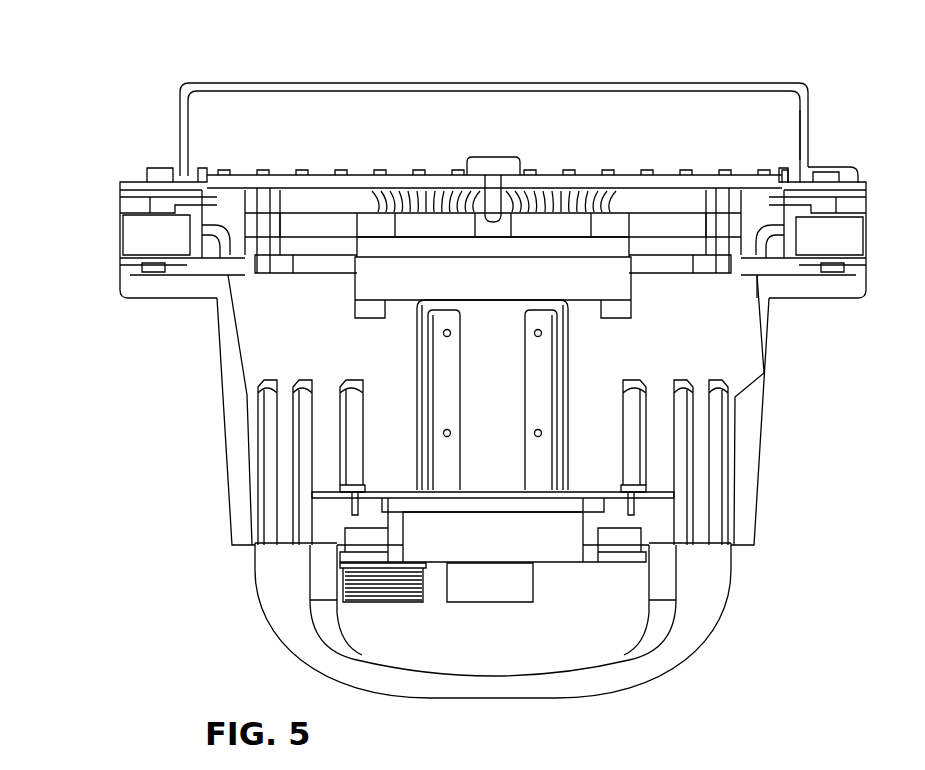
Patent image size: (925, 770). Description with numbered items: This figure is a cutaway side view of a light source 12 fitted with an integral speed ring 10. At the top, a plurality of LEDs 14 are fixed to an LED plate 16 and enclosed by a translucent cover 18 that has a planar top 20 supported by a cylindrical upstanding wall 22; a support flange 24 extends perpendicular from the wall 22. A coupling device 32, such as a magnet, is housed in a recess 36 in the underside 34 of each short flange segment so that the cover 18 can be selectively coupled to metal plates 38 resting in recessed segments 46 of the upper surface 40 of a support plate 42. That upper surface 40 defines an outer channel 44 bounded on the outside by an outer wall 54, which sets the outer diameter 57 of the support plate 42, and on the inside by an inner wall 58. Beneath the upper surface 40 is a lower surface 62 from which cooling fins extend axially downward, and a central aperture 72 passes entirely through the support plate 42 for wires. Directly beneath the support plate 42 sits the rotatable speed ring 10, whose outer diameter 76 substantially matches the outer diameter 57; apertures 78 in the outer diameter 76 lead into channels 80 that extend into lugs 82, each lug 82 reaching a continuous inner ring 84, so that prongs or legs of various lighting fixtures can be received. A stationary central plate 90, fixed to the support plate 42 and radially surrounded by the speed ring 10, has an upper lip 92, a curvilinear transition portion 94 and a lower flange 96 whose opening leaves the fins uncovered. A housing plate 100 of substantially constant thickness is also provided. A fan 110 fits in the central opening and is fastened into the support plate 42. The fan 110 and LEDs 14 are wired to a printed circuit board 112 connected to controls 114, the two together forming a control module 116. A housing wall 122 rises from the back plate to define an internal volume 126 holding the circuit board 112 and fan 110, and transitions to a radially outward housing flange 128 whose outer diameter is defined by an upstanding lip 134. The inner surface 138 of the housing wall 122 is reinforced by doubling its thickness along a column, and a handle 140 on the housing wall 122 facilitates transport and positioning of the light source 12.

The speed ring 10 is at (866, 262).
The light source 12 is at (766, 362).
The LEDs 14 is at (300, 172).
The LED plate 16 is at (767, 172).
The cover 18 is at (762, 82).
The planar top 20 is at (810, 84).
The upstanding wall 22 is at (812, 100).
The support flange 24 is at (838, 183).
The coupling device 32 is at (822, 172).
The underside 34 is at (140, 181).
The recesses 36 is at (162, 168).
The metal plates 38 is at (132, 183).
The upper surface 40 is at (218, 185).
The support plate 42 is at (322, 186).
The outer channel 44 is at (865, 192).
The recessed segments 46 is at (838, 186).
The outer wall 54 is at (120, 188).
The outer diameter 57 is at (120, 204).
The inner wall 58 is at (784, 170).
The lower surface 62 is at (366, 190).
The central aperture 72 is at (506, 178).
The outer diameter 76 is at (125, 236).
The apertures 78 is at (120, 222).
The channels 80 is at (130, 250).
The lugs 82 is at (184, 255).
The inner ring 84 is at (793, 258).
The central plate 90 is at (765, 250).
The upper lip 92 is at (787, 222).
The transition portion 94 is at (771, 260).
The lower flange 96 is at (753, 262).
The housing plate 100 is at (245, 268).
The fan 110 is at (350, 297).
The printed circuit board 112 is at (388, 490).
The controls 114 is at (537, 592).
The control module 116 is at (515, 549).
The housing wall 122 is at (228, 488).
The internal volume 126 is at (268, 361).
The housing flange 128 is at (140, 296).
The upstanding lip 134 is at (120, 268).
The inner surface 138 is at (540, 348).
The handle 140 is at (712, 600).